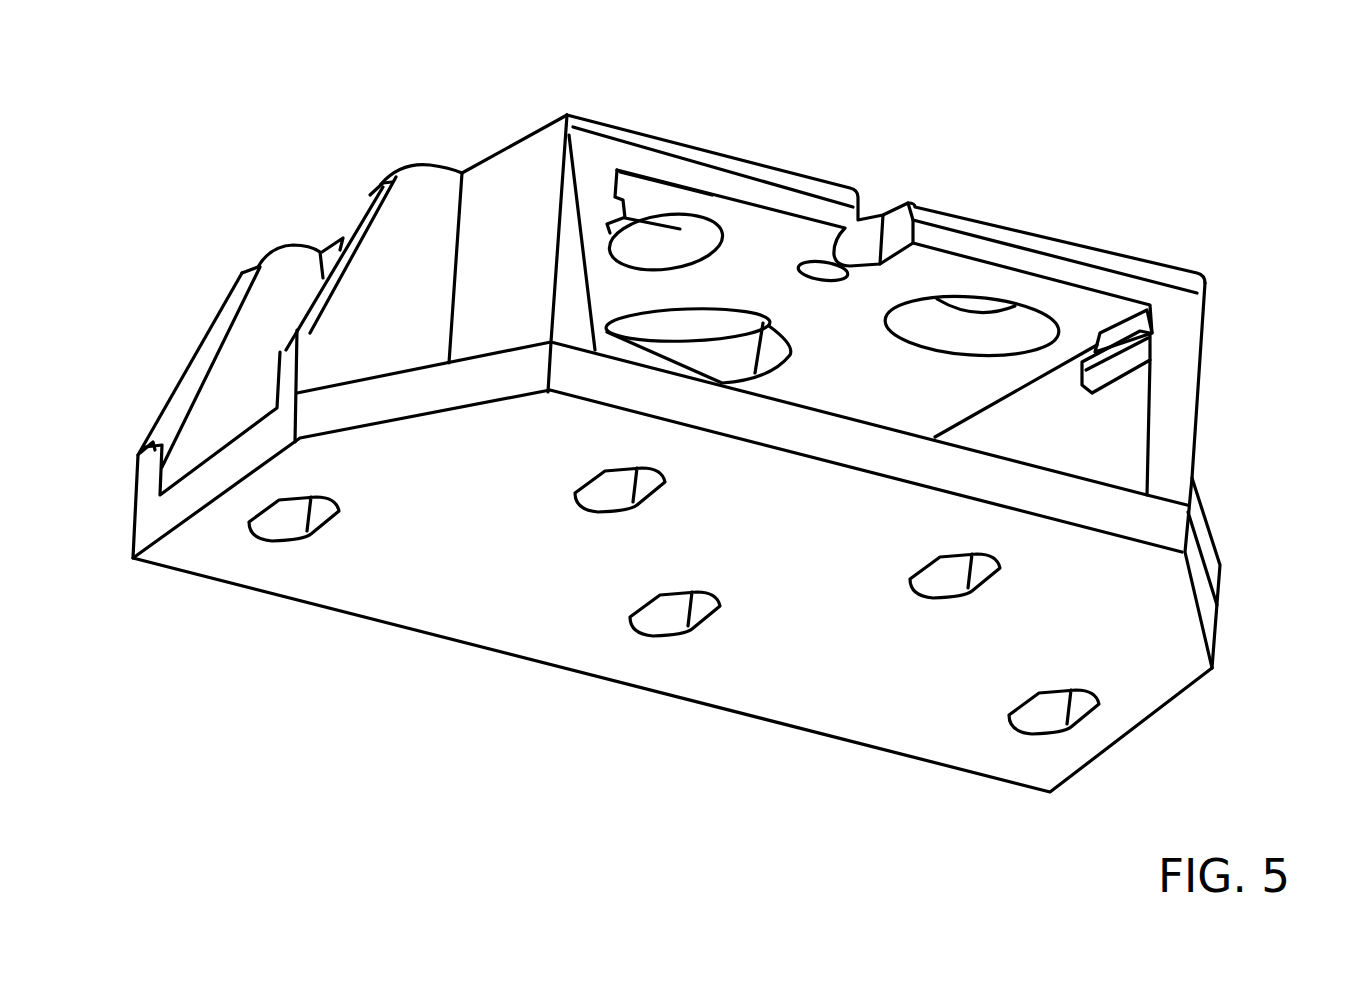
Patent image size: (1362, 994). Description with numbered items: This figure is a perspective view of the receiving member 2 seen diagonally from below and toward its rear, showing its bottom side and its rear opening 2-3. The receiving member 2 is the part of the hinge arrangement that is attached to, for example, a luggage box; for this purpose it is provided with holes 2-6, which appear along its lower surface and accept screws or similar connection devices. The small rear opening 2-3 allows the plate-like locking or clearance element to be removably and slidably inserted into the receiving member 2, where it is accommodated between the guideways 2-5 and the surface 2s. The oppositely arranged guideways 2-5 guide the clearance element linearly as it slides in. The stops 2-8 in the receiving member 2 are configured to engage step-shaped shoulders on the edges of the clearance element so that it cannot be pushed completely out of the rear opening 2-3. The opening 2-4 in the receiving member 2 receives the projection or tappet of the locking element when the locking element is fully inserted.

The receiving member 2 is at (1203, 394).
The rear opening 2-3 is at (1073, 303).
The opening 2-4 is at (798, 268).
The guideways 2-5 is at (610, 208).
The surface 2s is at (712, 213).
The holes 2-6 is at (277, 523).
The stops 2-8 is at (1135, 328).